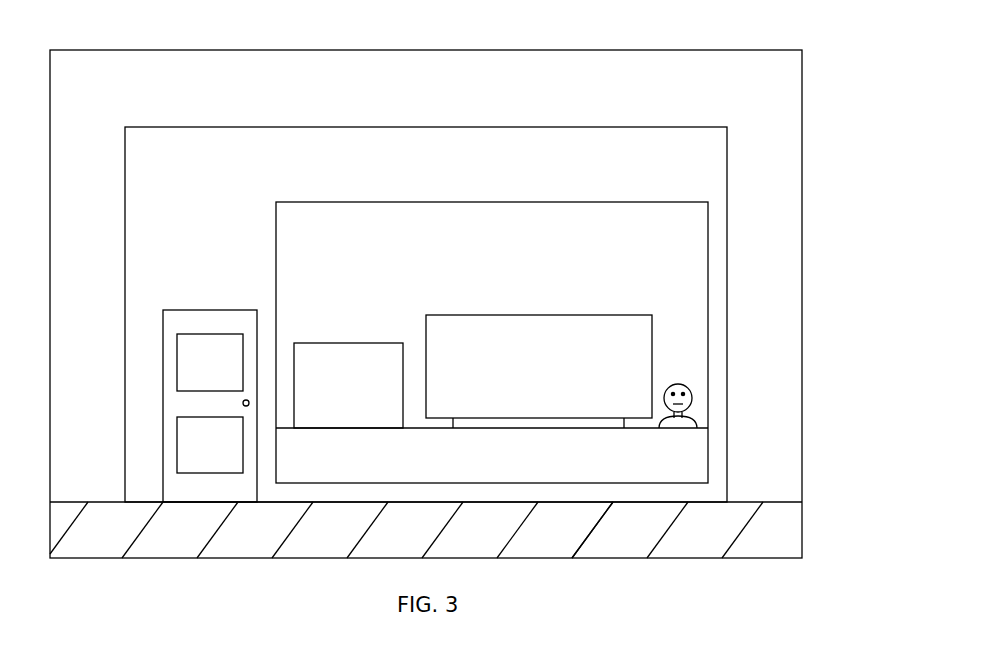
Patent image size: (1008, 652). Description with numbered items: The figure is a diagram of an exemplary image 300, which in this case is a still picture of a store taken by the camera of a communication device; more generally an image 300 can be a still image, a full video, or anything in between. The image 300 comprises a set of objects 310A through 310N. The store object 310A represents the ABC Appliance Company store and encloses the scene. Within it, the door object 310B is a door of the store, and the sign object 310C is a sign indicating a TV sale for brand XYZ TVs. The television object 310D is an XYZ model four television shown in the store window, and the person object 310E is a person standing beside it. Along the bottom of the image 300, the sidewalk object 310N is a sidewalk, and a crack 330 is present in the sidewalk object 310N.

The image 300 is at (650, 50).
The store object 310A is at (480, 127).
The door object 310B is at (171, 309).
The sign object 310C is at (313, 342).
The television object 310D is at (520, 315).
The person object 310E is at (684, 385).
The sidewalk object 310N is at (790, 535).
The crack 330 is at (652, 522).